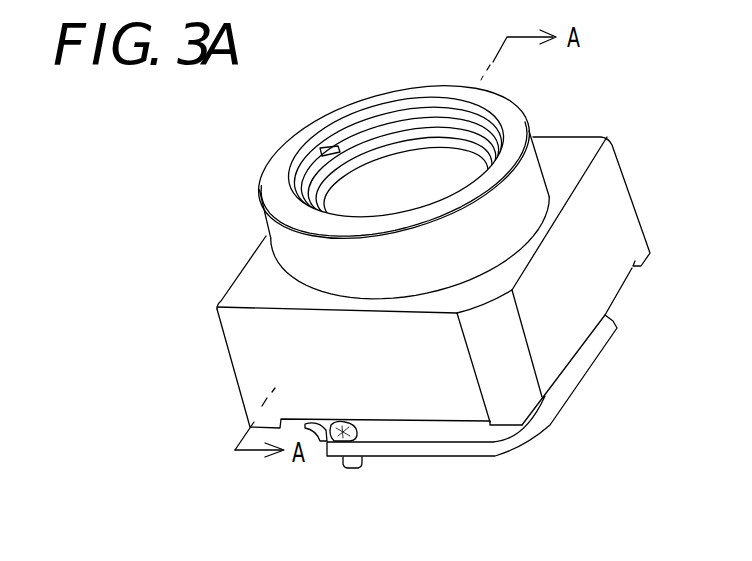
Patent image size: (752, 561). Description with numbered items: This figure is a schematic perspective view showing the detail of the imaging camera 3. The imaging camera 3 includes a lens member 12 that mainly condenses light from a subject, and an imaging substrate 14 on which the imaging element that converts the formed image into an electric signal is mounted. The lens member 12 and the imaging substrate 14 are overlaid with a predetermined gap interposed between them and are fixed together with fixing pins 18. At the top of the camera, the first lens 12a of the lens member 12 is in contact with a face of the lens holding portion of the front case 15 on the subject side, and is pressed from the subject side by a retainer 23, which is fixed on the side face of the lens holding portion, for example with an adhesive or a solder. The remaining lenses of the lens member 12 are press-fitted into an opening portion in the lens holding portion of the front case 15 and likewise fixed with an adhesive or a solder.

The imaging camera 3 is at (639, 106).
The lens member 12 is at (128, 132).
The first lens 12a is at (352, 200).
The retainer 23 is at (297, 261).
The front case 15 is at (237, 330).
The imaging substrate 14 is at (450, 449).
The fixing pin 18 is at (352, 468).